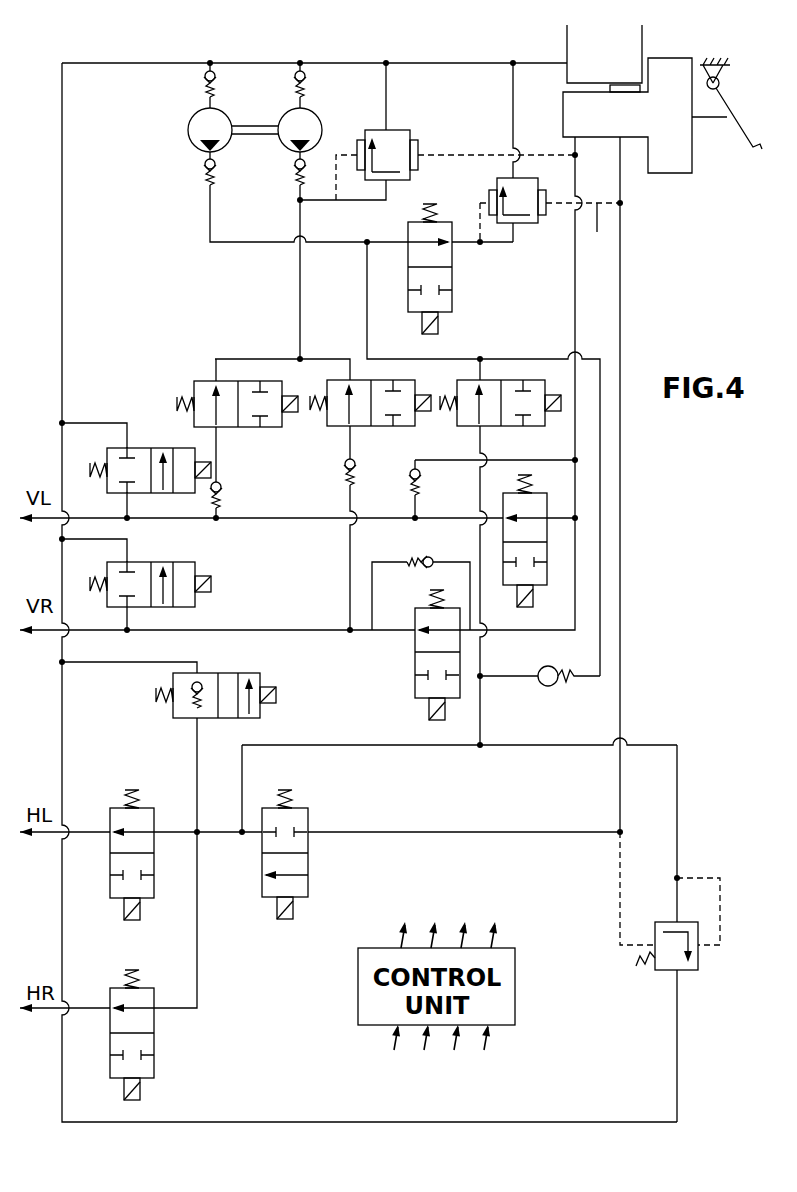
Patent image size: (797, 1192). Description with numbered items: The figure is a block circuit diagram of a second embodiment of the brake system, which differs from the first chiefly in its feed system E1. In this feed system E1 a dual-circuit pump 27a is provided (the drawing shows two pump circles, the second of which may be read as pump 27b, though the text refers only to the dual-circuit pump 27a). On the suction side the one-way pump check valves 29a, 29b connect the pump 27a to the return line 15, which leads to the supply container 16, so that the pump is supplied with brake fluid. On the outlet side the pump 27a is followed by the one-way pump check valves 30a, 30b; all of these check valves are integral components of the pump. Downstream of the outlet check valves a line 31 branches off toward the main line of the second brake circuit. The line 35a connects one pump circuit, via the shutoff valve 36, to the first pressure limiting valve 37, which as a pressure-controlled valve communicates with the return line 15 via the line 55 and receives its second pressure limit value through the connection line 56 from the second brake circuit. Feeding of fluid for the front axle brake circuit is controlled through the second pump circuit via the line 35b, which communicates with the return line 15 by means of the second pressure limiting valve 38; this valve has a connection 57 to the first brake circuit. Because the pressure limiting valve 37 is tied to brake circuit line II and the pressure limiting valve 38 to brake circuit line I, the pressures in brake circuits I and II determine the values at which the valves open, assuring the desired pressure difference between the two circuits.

The return line 15 is at (175, 63).
The supply container 16 is at (645, 50).
The dual-circuit pump 27a is at (290, 113).
The hydraulic pump 27b is at (300, 130).
The one-way pump check valve 29a is at (203, 84).
The one-way pump check valve 29b is at (308, 84).
The one-way pump check valve 30a is at (205, 178).
The one-way pump check valve 30b is at (293, 172).
The line 31 is at (445, 358).
The line 35a is at (235, 242).
The line 35b is at (302, 218).
The shutoff valve 36 is at (453, 297).
The pressure limiting valve 37 is at (535, 225).
The second pressure limiting valve 38 is at (400, 130).
The line 55 is at (513, 137).
The connection line 56 is at (598, 234).
The connection 57 is at (488, 163).
The feed system E1 is at (456, 126).
The brake circuit I is at (575, 303).
The brake circuit II is at (620, 298).